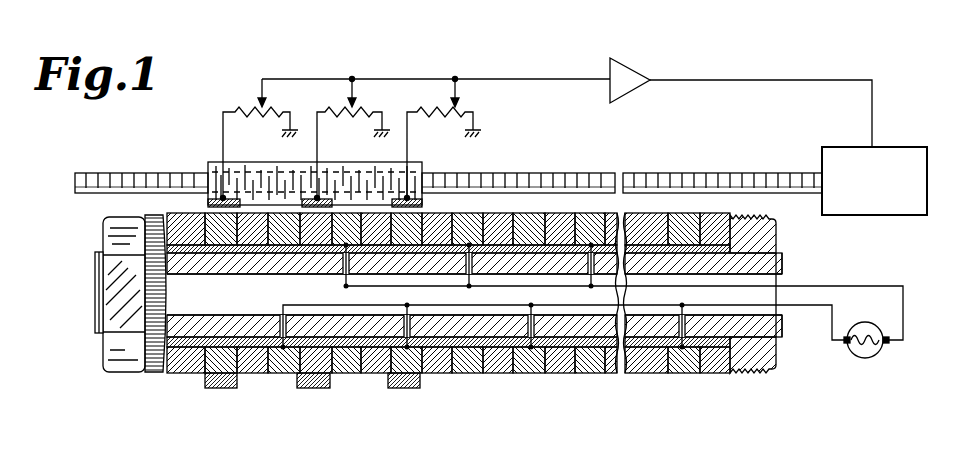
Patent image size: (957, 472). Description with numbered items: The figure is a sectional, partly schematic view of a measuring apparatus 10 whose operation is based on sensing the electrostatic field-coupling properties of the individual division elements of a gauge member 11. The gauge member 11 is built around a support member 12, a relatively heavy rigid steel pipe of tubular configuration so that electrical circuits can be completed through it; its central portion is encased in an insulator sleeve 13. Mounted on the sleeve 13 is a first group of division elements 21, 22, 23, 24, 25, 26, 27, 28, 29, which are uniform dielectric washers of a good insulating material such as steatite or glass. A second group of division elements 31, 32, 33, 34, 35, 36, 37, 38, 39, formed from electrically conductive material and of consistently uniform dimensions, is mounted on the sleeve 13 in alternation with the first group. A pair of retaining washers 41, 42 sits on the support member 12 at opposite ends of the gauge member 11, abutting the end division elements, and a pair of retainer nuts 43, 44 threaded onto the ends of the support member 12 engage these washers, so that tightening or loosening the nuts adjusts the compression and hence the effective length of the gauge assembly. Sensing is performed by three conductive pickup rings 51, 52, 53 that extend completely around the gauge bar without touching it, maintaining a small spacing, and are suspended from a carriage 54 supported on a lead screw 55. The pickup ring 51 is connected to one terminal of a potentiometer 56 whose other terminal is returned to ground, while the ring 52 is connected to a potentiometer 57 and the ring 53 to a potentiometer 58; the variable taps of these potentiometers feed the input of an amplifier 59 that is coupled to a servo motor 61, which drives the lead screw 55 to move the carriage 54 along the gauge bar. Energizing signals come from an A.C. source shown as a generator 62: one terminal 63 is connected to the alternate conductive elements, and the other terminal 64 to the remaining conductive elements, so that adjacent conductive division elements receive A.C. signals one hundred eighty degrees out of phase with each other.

The measuring apparatus 10 is at (191, 150).
The gauge member 11 is at (100, 345).
The support member 12 is at (765, 268).
The insulator sleeve 13 is at (230, 335).
The division element 21 is at (187, 366).
The division element 22 is at (258, 366).
The division element 23 is at (317, 364).
The division element 24 is at (372, 367).
The division element 25 is at (448, 364).
The division element 26 is at (498, 366).
The division element 27 is at (559, 368).
The division element 28 is at (612, 372).
The division element 29 is at (655, 376).
The division element 31 is at (230, 364).
The division element 32 is at (276, 374).
The division element 33 is at (346, 366).
The division element 34 is at (405, 380).
The division element 35 is at (468, 366).
The division element 36 is at (527, 366).
The division element 37 is at (590, 366).
The division element 38 is at (633, 373).
The division element 39 is at (680, 373).
The retaining washer 41 is at (155, 364).
The retaining washer 42 is at (718, 373).
The retainer nut 43 is at (122, 362).
The retainer nut 44 is at (755, 362).
The pickup ring 51 is at (207, 203).
The pickup ring 52 is at (306, 200).
The pickup ring 53 is at (424, 204).
The carriage 54 is at (355, 165).
The lead screw 55 is at (515, 172).
The potentiometer 56 is at (236, 108).
The potentiometer 57 is at (331, 108).
The potentiometer 58 is at (441, 108).
The amplifier 59 is at (624, 80).
The servo motor 61 is at (838, 152).
The generator 62 is at (877, 326).
The terminal 63 is at (887, 344).
The terminal 64 is at (846, 344).